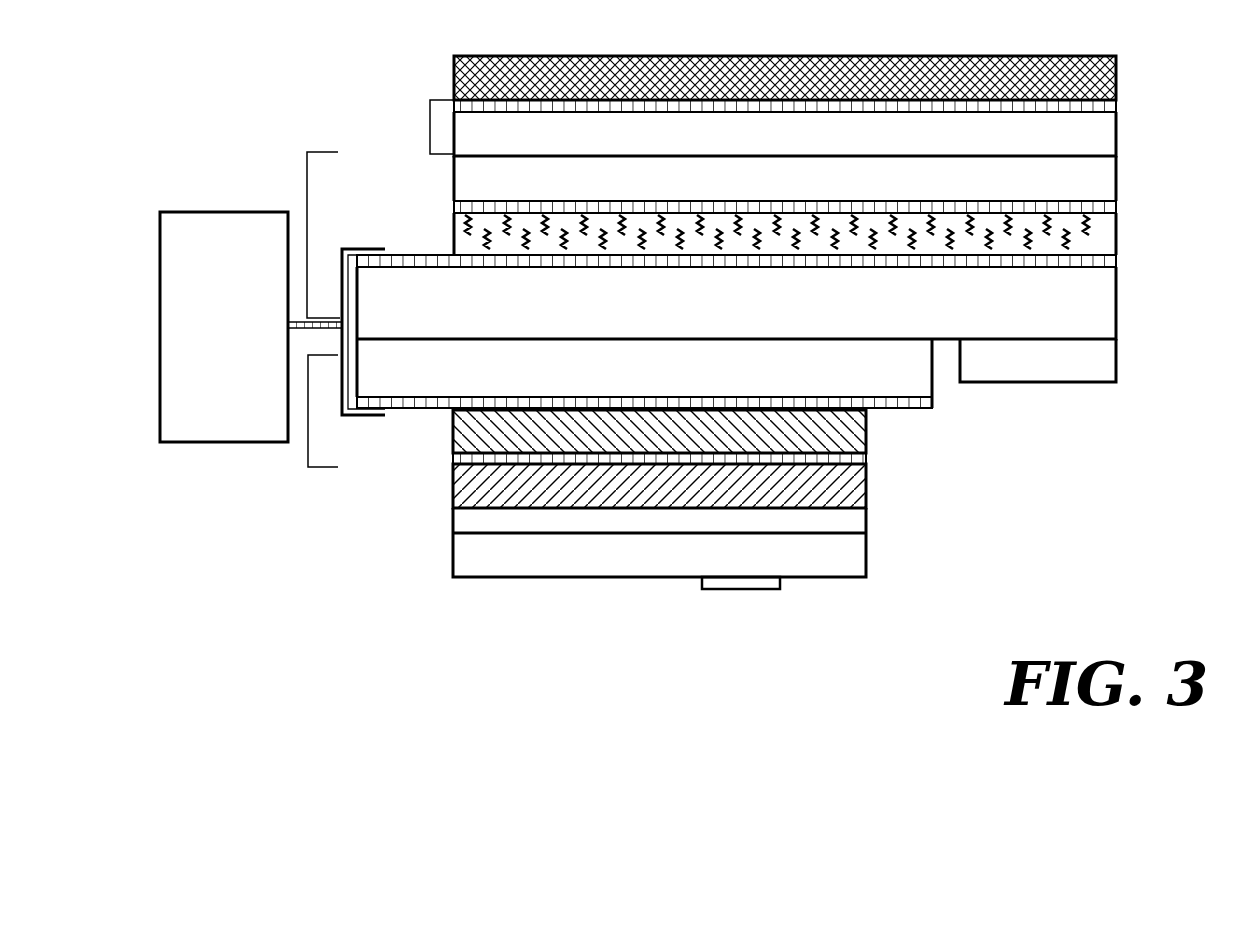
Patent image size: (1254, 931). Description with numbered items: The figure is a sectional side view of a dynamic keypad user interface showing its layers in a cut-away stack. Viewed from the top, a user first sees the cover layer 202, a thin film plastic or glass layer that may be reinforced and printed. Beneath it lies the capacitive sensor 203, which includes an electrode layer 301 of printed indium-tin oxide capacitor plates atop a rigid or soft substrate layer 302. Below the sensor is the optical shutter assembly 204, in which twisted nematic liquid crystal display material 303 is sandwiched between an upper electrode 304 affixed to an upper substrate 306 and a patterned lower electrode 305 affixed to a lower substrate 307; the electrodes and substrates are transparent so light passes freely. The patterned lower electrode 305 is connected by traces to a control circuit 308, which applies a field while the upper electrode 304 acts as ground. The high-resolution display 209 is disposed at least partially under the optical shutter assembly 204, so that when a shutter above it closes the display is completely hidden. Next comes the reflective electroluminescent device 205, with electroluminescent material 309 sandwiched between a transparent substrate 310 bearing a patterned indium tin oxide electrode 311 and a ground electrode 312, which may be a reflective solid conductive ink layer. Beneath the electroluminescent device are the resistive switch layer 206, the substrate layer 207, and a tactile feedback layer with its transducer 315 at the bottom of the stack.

The cover layer 202 is at (945, 57).
The capacitive sensor 203 is at (430, 137).
The optical shutter assembly 204 is at (307, 182).
The reflective electroluminescent device 205 is at (307, 451).
The resistive switch layer 206 is at (866, 475).
The substrate layer 207 is at (860, 530).
The high-resolution display 209 is at (1103, 350).
The electrode layer 301 is at (1125, 106).
The substrate layer 302 is at (1108, 139).
The twisted nematic liquid crystal display material 303 is at (1087, 240).
The upper electrode 304 is at (453, 207).
The lower electrode 305 is at (443, 260).
The upper substrate 306 is at (1110, 183).
The lower substrate 307 is at (1103, 296).
The control circuit 308 is at (187, 240).
The electroluminescent material 309 is at (866, 415).
The transparent substrate 310 is at (920, 373).
The patterned electrode 311 is at (932, 402).
The ground electrode 312 is at (453, 457).
The transducer 315 is at (700, 580).